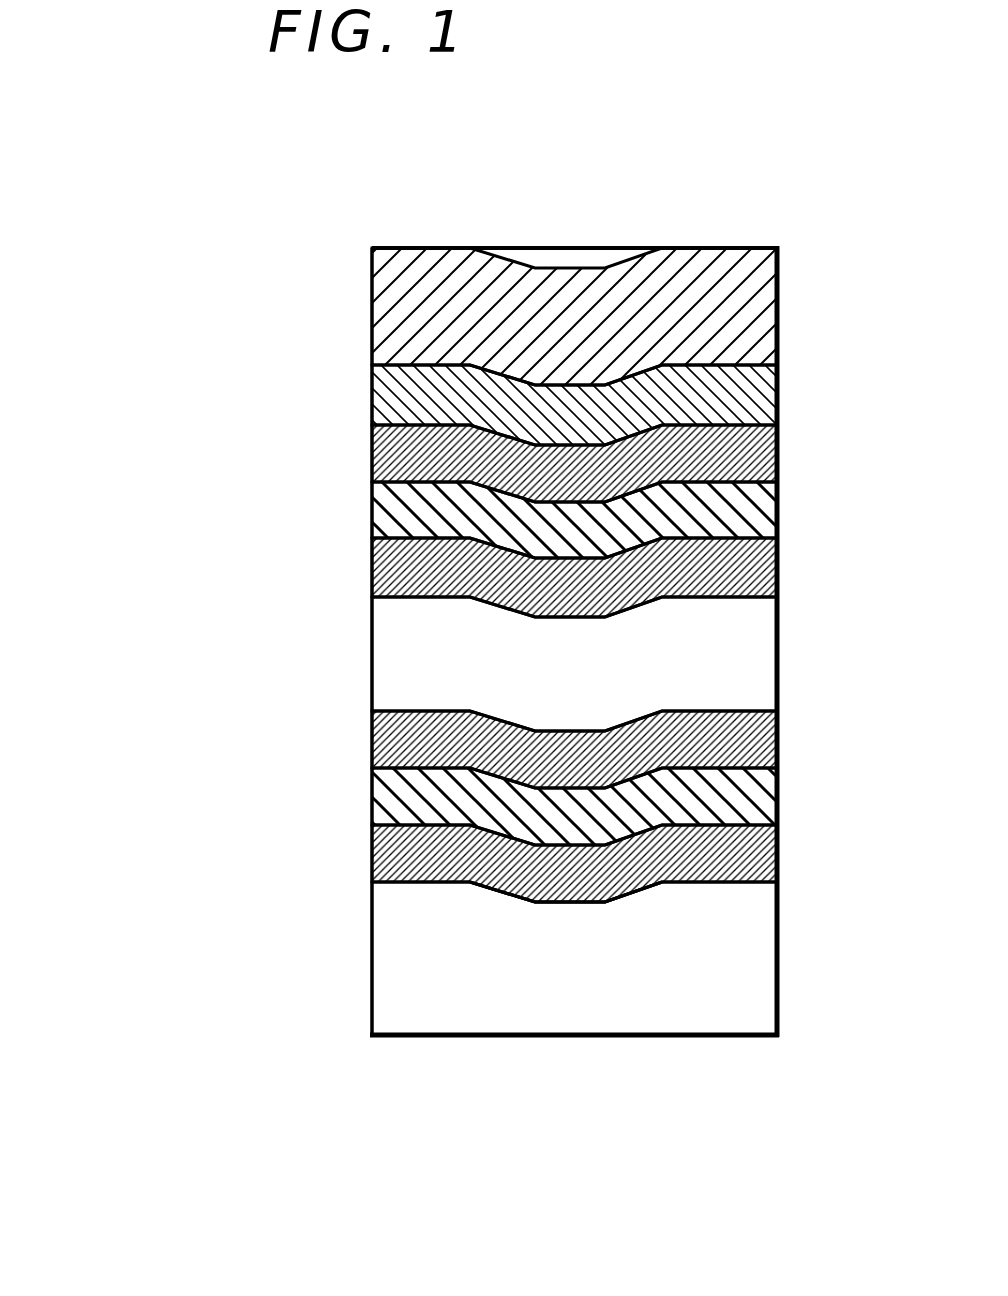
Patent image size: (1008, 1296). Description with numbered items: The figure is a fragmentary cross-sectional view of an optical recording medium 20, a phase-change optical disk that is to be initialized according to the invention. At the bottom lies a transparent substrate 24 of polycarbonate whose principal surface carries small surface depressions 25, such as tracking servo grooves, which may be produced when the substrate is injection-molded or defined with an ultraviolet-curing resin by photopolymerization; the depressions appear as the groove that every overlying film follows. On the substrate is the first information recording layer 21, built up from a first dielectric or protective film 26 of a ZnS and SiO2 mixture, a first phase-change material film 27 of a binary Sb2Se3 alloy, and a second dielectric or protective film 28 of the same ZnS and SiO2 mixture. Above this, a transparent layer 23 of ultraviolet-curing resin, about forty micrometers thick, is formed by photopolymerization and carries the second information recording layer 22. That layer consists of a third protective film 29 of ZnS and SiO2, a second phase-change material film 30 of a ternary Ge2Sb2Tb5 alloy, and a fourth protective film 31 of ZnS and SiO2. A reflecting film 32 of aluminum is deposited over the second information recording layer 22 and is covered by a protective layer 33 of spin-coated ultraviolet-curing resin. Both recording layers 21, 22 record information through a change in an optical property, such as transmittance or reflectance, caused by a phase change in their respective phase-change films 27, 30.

The optical recording medium 20 is at (689, 196).
The first information recording layer 21 is at (358, 713).
The second information recording layer 22 is at (358, 428).
The transparent layer 23 is at (747, 655).
The transparent substrate 24 is at (760, 960).
The small surface depressions 25 is at (571, 902).
The first protective film 26 is at (757, 855).
The first phase-change material film 27 is at (757, 795).
The second protective film 28 is at (757, 737).
The third protective film 29 is at (757, 570).
The second phase-change material film 30 is at (757, 515).
The fourth protective film 31 is at (757, 458).
The reflecting film 32 is at (757, 393).
The protective layer 33 is at (757, 302).